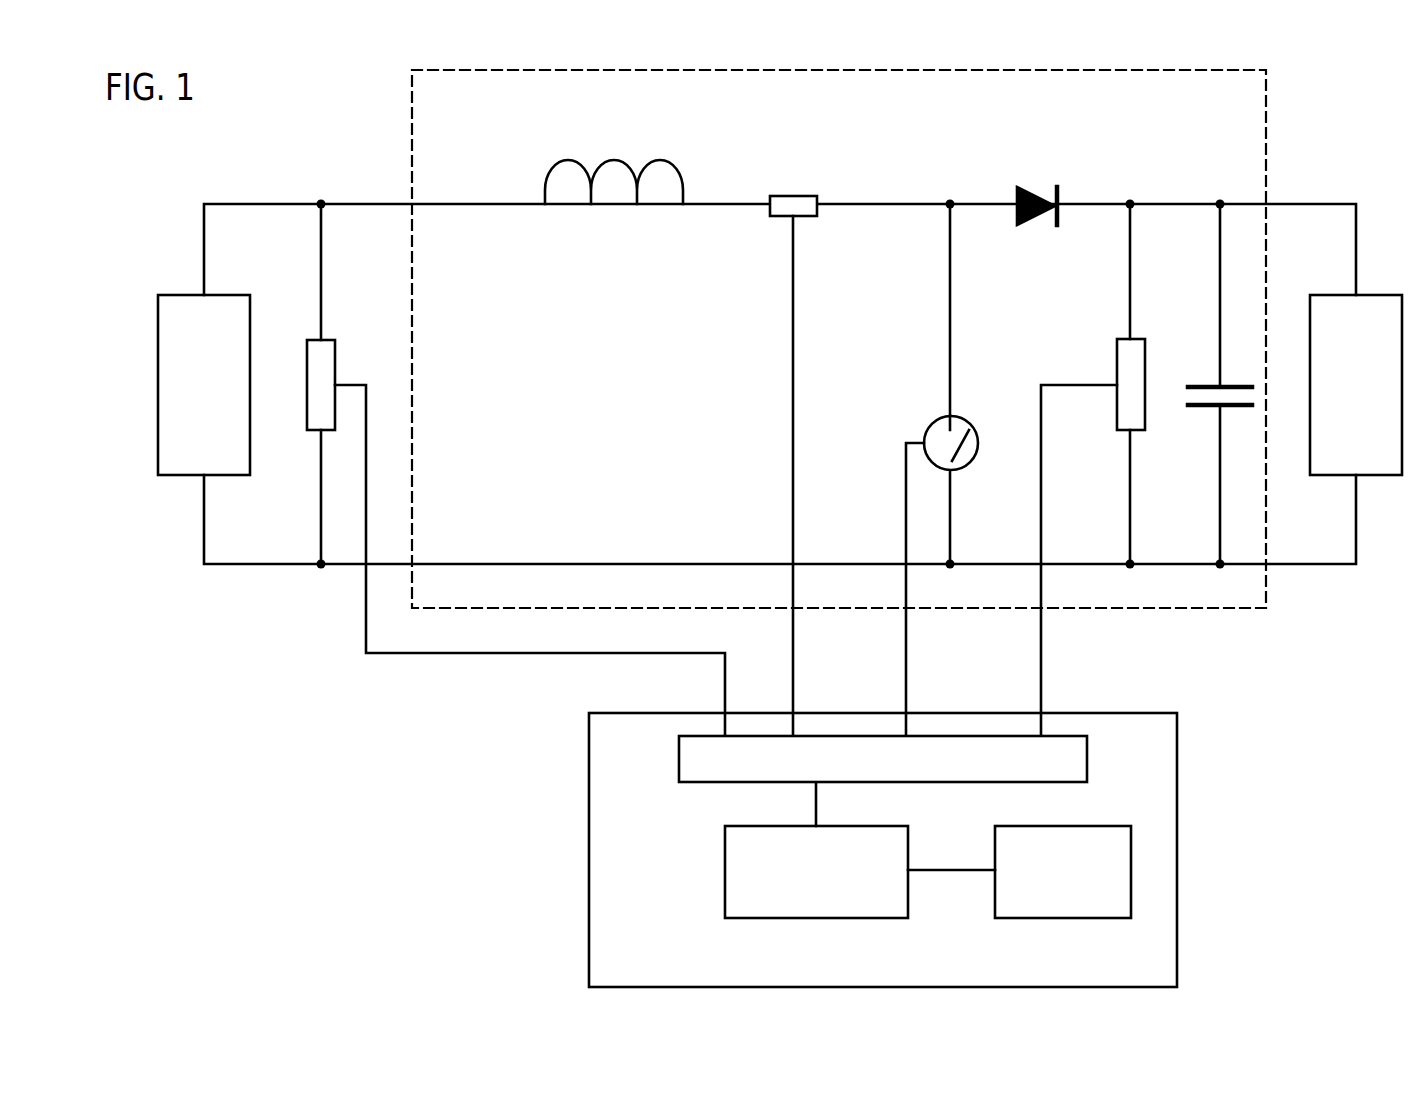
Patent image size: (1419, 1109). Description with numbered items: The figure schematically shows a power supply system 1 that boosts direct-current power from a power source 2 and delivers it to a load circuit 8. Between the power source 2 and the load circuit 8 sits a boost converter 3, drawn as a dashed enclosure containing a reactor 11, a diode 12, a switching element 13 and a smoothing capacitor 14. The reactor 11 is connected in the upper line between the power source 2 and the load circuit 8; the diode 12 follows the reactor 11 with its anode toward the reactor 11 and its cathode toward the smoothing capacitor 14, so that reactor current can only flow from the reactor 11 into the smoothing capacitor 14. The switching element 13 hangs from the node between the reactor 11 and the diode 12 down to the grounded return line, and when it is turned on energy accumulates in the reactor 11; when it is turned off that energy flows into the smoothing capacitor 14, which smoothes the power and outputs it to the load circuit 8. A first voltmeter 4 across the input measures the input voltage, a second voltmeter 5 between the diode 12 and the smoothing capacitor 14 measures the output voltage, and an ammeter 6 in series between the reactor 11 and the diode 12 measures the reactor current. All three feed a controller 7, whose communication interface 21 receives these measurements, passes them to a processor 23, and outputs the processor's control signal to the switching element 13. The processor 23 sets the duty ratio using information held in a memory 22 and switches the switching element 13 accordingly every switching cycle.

The power supply system 1 is at (1337, 920).
The power source 2 is at (176, 478).
The boost converter 3 is at (1232, 612).
The voltmeter 4 is at (308, 410).
The voltmeter 5 is at (1117, 352).
The ammeter 6 is at (801, 195).
The controller 7 is at (1178, 811).
The load circuit 8 is at (1378, 477).
The reactor 11 is at (612, 203).
The diode 12 is at (1036, 193).
The switching element 13 is at (928, 421).
The smoothing capacitor 14 is at (1200, 386).
The communication interface 21 is at (1090, 759).
The memory 22 is at (1085, 919).
The processor 23 is at (724, 846).